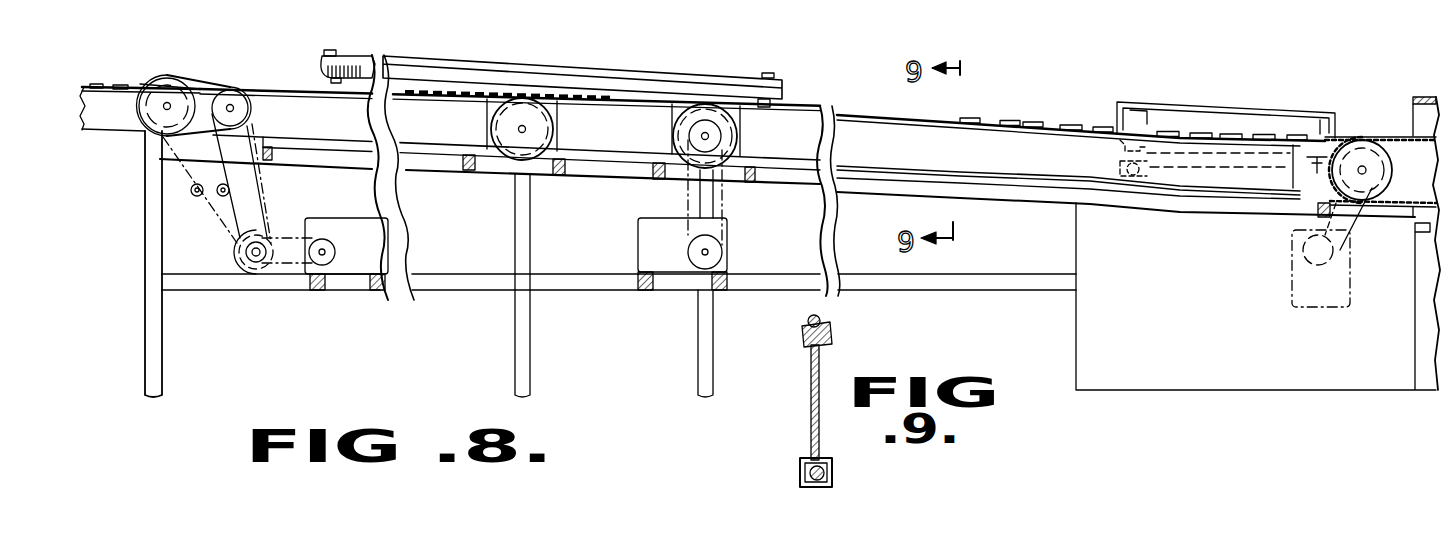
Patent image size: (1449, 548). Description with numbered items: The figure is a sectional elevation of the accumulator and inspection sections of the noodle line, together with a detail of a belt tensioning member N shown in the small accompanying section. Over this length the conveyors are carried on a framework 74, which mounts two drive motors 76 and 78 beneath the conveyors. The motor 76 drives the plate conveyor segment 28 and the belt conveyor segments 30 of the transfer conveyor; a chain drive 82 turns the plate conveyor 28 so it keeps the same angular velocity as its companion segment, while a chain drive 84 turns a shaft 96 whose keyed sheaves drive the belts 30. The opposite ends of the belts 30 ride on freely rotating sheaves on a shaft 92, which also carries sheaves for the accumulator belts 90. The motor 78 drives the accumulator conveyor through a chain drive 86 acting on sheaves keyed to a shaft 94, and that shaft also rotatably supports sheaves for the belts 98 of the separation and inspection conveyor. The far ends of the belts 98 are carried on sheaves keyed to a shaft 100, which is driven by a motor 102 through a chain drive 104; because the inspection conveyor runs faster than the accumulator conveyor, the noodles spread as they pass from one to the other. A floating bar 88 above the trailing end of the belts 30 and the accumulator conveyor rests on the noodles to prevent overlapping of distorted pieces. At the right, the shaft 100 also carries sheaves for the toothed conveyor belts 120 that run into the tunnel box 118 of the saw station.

In FIG. 8, the plate conveyor segment 28 is at (114, 87).
In FIG. 8, the belt conveyor segments 30 is at (302, 88).
In FIG. 8, the framework 74 is at (462, 297).
In FIG. 8, the drive motor 76 is at (348, 218).
In FIG. 8, the drive motor 78 is at (640, 240).
In FIG. 8, the chain drive 82 is at (212, 96).
In FIG. 8, the chain drive 84 is at (190, 173).
In FIG. 8, the chain drive 86 is at (722, 202).
In FIG. 8, the floating bar 88 is at (357, 63).
In FIG. 8, the belts 90 is at (651, 101).
In FIG. 8, the shaft 92 is at (520, 131).
In FIG. 8, the shaft 94 is at (708, 136).
In FIG. 8, the shaft 96 is at (163, 110).
In FIG. 8, the belts 98 is at (904, 115).
In FIG. 9, the belts 98 is at (823, 320).
In FIG. 8, the shaft 100 is at (1362, 170).
In FIG. 8, the motor 102 is at (1290, 297).
In FIG. 8, the chain drive 104 is at (1352, 222).
In FIG. 8, the tunnel box 118 is at (1427, 97).
In FIG. 8, the toothed conveyor belts 120 is at (1378, 140).
In FIG. 8, the spring clips N is at (440, 95).